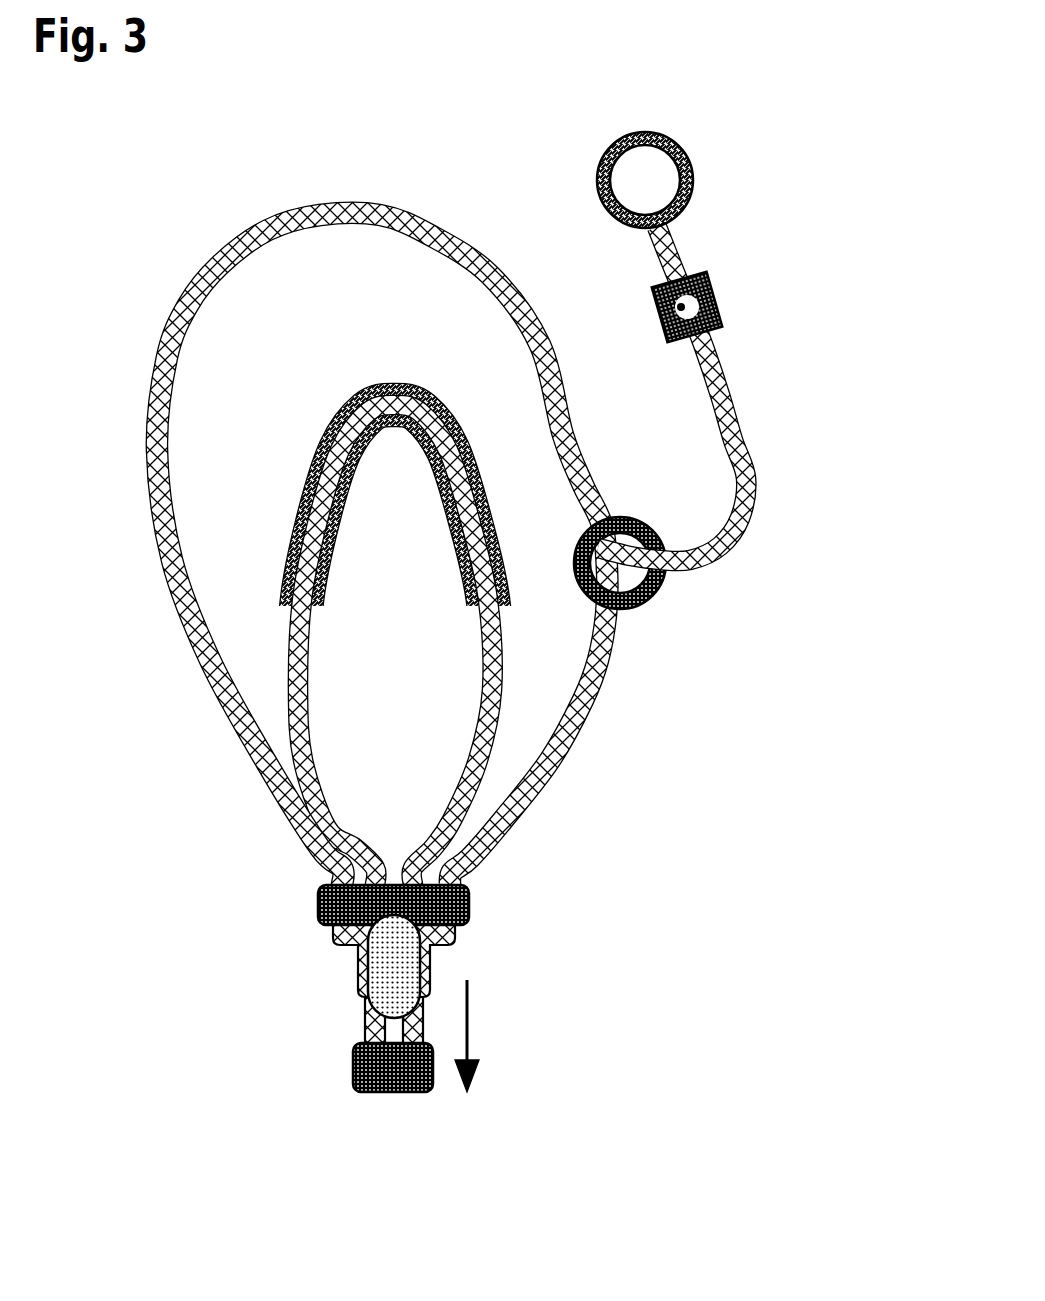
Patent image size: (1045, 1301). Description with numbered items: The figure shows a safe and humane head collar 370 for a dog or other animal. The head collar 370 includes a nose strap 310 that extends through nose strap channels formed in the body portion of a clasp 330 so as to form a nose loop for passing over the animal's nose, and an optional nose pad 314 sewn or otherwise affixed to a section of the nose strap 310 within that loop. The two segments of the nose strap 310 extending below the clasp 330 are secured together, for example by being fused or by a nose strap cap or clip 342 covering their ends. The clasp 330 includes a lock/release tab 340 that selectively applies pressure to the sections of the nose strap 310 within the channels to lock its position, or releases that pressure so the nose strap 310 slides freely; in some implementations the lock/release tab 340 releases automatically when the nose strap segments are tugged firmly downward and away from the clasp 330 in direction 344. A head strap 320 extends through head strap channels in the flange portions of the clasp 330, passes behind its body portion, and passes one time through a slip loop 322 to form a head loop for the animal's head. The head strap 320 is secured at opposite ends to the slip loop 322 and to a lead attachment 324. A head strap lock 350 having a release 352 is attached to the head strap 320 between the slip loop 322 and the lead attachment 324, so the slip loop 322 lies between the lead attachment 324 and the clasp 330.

The nose strap 310 is at (483, 677).
The nose pad 314 is at (342, 410).
The head strap 320 is at (168, 612).
The slip loop 322 is at (625, 517).
The lead attachment 324 is at (630, 134).
The clasp 330 is at (348, 902).
The lock/release tab 340 is at (395, 978).
The nose strap cap or clip 342 is at (397, 1093).
The direction 344 is at (470, 1013).
The head strap lock 350 is at (722, 297).
The release 352 is at (662, 328).
The head collar 370 is at (843, 173).